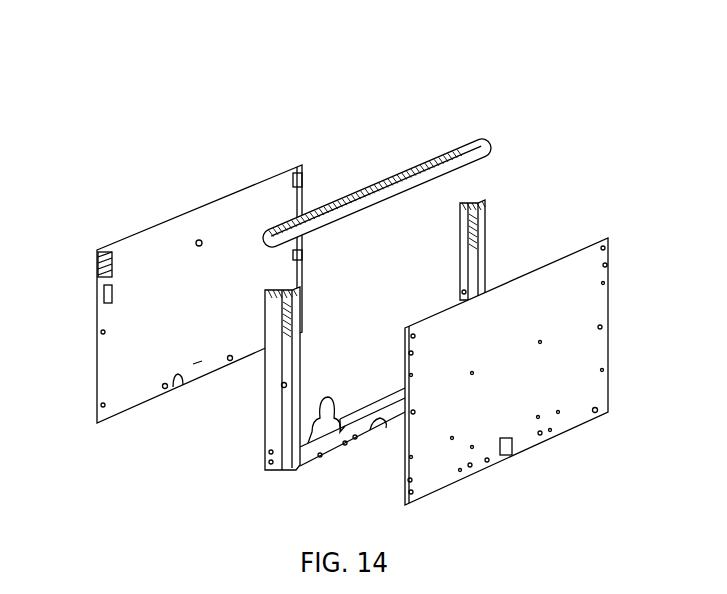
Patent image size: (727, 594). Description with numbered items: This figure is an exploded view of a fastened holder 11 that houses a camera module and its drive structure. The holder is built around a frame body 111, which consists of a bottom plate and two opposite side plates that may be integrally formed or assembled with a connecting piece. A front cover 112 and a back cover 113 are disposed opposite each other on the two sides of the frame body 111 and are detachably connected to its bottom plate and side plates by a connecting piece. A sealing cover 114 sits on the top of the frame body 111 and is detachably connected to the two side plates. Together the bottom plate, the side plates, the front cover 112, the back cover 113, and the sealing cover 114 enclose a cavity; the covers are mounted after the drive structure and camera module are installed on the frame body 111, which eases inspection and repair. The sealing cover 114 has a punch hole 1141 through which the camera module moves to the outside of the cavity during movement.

The fastened holder 11 is at (103, 100).
The frame body 111 is at (277, 420).
The front cover 112 is at (560, 272).
The back cover 113 is at (151, 251).
The sealing cover 114 is at (473, 129).
The punch hole 1141 is at (363, 176).